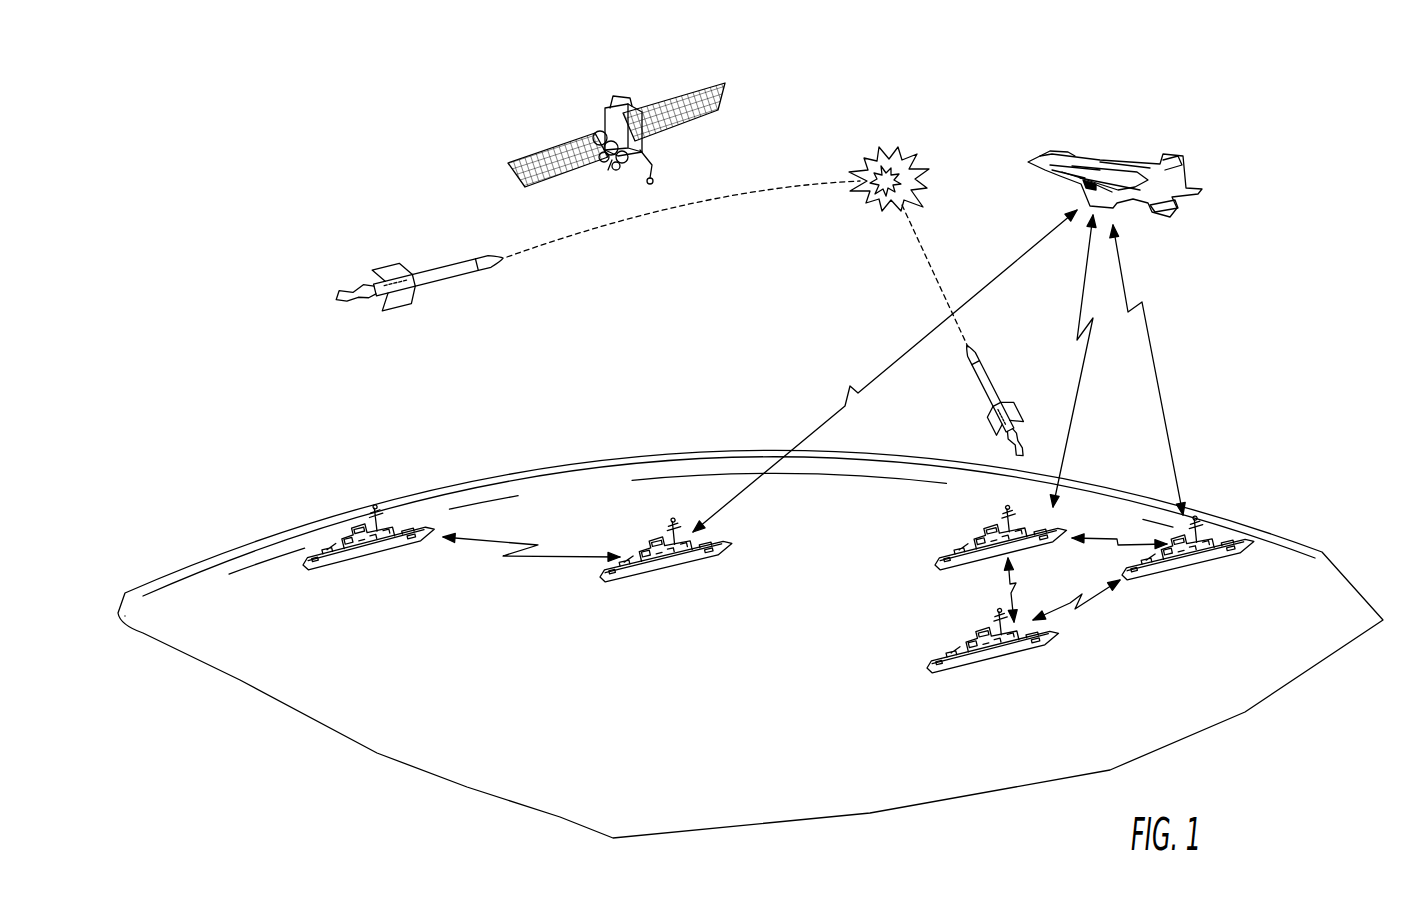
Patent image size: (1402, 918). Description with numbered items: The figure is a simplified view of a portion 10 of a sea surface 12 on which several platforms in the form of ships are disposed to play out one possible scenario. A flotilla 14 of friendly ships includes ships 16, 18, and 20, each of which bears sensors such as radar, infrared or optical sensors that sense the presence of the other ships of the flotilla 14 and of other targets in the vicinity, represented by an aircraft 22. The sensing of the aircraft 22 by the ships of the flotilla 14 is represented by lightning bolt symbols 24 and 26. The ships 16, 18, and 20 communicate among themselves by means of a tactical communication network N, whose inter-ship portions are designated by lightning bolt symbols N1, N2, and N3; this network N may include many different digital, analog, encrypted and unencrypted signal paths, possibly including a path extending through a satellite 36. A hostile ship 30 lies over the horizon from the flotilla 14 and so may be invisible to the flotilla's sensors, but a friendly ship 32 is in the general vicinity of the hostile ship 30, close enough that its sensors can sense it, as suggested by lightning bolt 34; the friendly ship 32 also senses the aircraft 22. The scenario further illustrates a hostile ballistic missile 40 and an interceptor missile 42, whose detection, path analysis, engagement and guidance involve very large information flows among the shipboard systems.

The portion of sea surface 10 is at (468, 725).
The sea surface 12 is at (341, 660).
The flotilla 14 is at (821, 647).
The ship 16 is at (1017, 653).
The ship 18 is at (960, 557).
The ship 20 is at (1218, 565).
The aircraft 22 is at (1167, 217).
The lightning bolt symbol 24 is at (1157, 370).
The lightning bolt symbol 26 is at (1078, 391).
The hostile ship 30 is at (394, 552).
The friendly ship 32 is at (680, 568).
The lightning bolt 34 is at (892, 368).
The satellite 36 is at (620, 106).
The hostile ballistic missile 40 is at (420, 276).
The interceptor missile 42 is at (993, 378).
The communication network N is at (942, 618).
The inter-ship portion of network N1 is at (1009, 588).
The inter-ship portion of network N2 is at (1094, 600).
The inter-ship portion of network N3 is at (1110, 538).